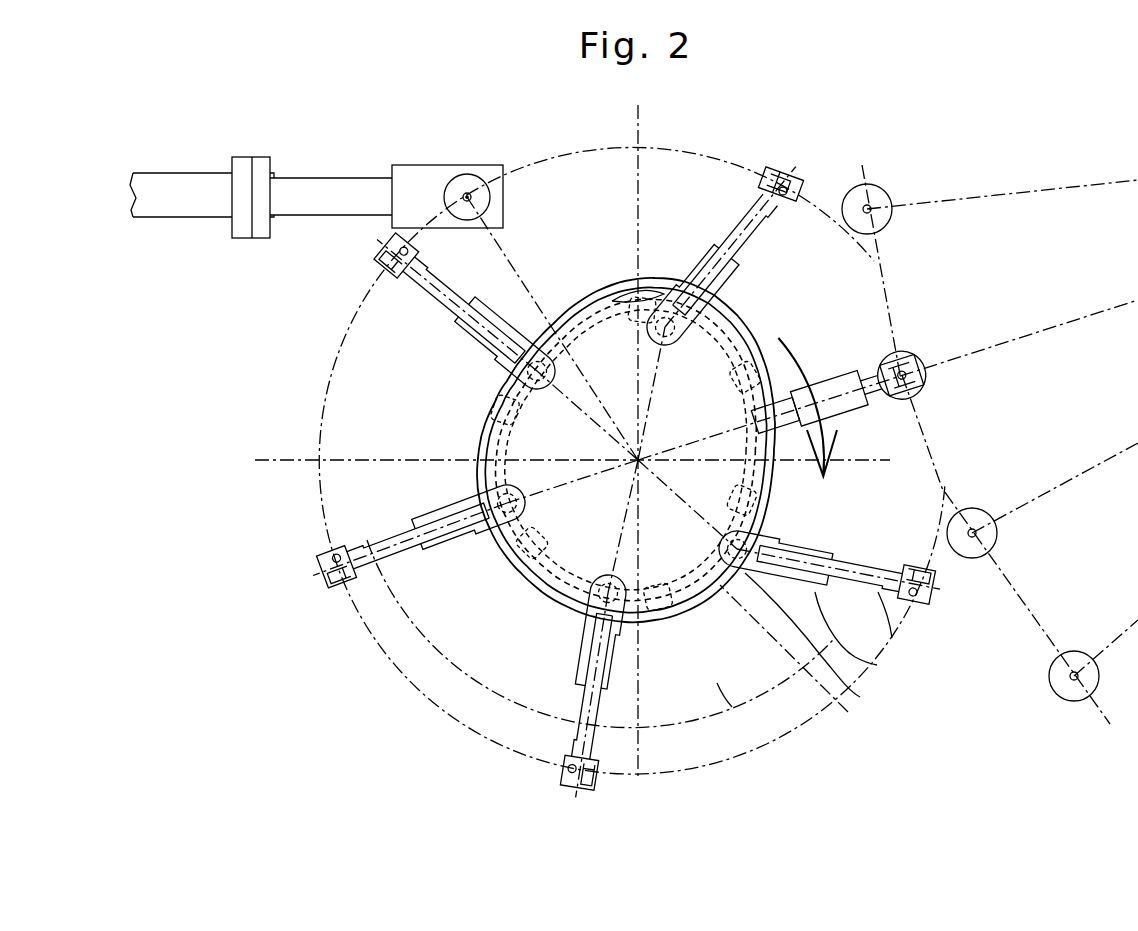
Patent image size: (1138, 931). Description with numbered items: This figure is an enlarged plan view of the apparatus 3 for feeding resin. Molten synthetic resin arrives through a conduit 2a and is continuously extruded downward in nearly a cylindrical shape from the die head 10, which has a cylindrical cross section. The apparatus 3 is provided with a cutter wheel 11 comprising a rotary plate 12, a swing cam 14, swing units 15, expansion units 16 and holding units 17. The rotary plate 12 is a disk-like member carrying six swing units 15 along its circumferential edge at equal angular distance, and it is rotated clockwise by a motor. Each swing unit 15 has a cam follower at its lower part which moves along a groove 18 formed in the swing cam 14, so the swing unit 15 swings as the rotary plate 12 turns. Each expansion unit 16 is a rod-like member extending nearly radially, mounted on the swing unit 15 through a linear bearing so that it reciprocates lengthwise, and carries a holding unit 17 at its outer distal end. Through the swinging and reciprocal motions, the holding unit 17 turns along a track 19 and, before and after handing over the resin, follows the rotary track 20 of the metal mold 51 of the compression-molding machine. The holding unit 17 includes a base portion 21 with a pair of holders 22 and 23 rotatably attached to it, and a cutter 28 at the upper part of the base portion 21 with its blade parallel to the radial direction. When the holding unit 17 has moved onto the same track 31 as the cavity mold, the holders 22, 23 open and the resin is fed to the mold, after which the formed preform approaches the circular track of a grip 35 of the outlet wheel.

The conduit 2a is at (320, 190).
The apparatus for feeding resin 3 is at (282, 407).
The die head 10 is at (488, 165).
The cutter wheel 11 is at (497, 388).
The rotary plate 12 is at (860, 697).
The swing cam 14 is at (848, 712).
The swing unit 15 is at (877, 665).
The expansion unit 16 is at (892, 638).
The holding unit 17 is at (793, 165).
The groove 18 is at (800, 488).
The track 19 is at (332, 353).
The rotary track 20 is at (1104, 718).
The base portion 21 is at (788, 205).
The holder 22 is at (787, 168).
The holder 23 is at (762, 183).
The cutter 28 is at (764, 178).
The track 31 is at (926, 435).
The grip 35 is at (588, 703).
The metal mold 51 is at (890, 187).